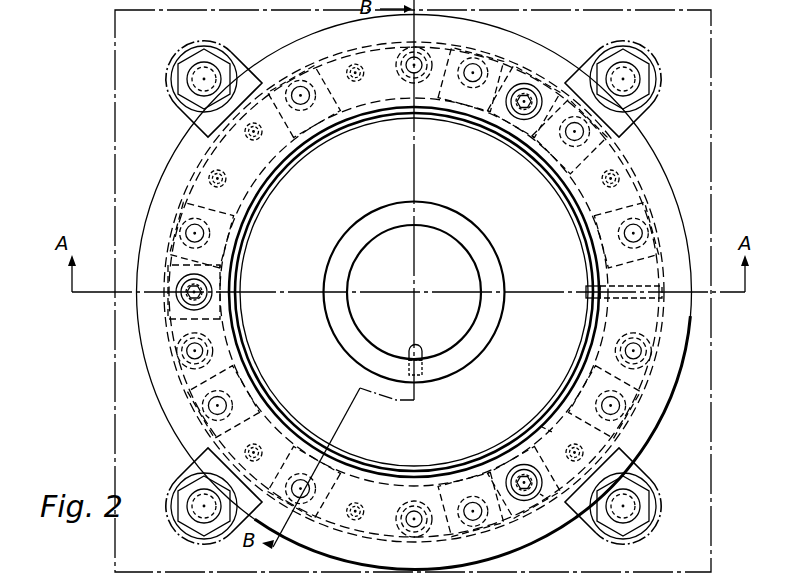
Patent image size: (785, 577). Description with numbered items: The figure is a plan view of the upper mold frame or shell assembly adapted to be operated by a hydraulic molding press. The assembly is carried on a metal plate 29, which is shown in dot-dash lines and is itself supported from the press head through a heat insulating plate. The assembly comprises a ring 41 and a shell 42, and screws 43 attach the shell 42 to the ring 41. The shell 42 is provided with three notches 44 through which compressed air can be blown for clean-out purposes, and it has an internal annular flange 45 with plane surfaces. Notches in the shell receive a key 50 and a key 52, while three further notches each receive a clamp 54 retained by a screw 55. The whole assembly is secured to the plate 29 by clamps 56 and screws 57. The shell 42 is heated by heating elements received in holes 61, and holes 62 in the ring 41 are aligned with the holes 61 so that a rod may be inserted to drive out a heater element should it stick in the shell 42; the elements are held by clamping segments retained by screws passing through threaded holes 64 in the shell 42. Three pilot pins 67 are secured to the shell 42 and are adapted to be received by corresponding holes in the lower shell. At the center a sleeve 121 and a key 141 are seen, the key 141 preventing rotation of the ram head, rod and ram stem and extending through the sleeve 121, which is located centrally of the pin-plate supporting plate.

The metal plate 29 is at (115, 44).
The ring 41 is at (165, 178).
The shell 42 is at (167, 337).
The screws 43 is at (514, 111).
The notches 44 is at (296, 151).
The internal annular flange 45 is at (262, 372).
The key 50 is at (588, 298).
The key 52 is at (594, 300).
The clamp 54 is at (542, 427).
The screw 55 is at (546, 491).
The clamps 56 is at (646, 470).
The screws 57 is at (652, 496).
The holes 61 is at (645, 205).
The holes 62 is at (634, 233).
The threaded holes 64 is at (258, 148).
The pilot pins 67 is at (404, 55).
The sleeve 121 is at (457, 237).
The key 141 is at (416, 345).